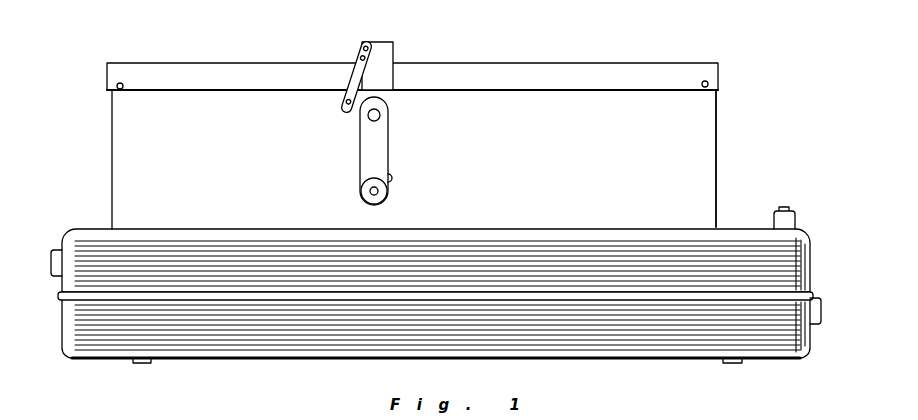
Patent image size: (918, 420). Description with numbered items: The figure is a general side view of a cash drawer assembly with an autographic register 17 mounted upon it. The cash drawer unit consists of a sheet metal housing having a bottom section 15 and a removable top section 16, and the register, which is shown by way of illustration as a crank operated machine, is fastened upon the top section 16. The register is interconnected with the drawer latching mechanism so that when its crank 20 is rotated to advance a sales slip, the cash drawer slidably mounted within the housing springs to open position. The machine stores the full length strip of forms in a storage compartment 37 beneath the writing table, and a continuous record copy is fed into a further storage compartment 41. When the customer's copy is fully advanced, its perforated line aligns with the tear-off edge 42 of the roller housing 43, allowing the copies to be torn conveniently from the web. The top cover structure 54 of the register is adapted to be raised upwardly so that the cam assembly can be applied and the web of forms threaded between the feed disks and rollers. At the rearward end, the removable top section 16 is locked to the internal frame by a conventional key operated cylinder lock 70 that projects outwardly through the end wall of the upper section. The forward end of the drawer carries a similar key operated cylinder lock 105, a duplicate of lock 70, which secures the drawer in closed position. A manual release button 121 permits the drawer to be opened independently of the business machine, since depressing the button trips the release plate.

The bottom section 15 is at (224, 340).
The removable top section 16 is at (745, 240).
The autographic register 17 is at (718, 113).
The crank 20 is at (378, 138).
The storage compartment 37 is at (666, 164).
The storage compartment 41 is at (158, 163).
The tear-off edge 42 is at (356, 54).
The roller housing 43 is at (396, 50).
The top cover structure 54 is at (509, 64).
The cylinder lock 70 is at (56, 250).
The cylinder lock 105 is at (815, 322).
The manual release button 121 is at (786, 214).